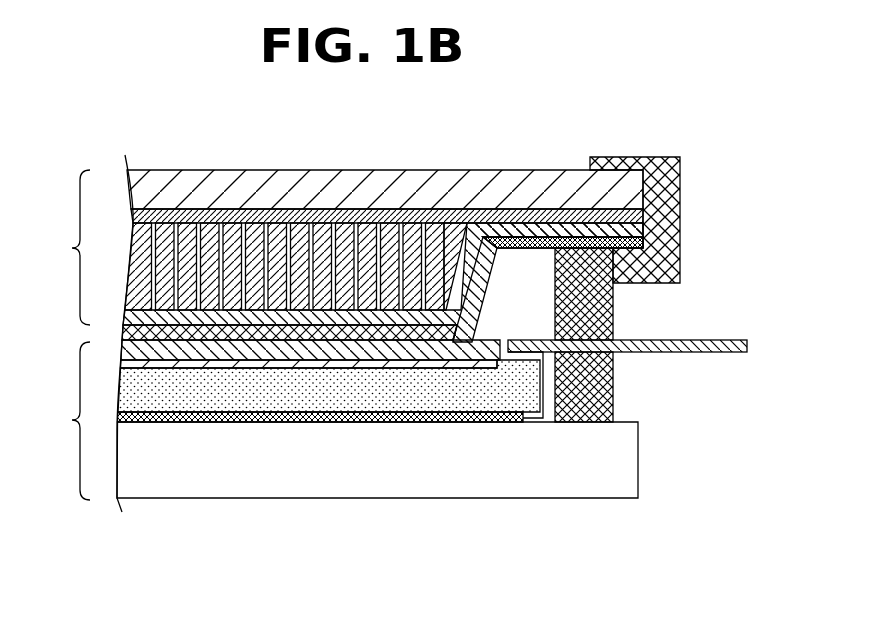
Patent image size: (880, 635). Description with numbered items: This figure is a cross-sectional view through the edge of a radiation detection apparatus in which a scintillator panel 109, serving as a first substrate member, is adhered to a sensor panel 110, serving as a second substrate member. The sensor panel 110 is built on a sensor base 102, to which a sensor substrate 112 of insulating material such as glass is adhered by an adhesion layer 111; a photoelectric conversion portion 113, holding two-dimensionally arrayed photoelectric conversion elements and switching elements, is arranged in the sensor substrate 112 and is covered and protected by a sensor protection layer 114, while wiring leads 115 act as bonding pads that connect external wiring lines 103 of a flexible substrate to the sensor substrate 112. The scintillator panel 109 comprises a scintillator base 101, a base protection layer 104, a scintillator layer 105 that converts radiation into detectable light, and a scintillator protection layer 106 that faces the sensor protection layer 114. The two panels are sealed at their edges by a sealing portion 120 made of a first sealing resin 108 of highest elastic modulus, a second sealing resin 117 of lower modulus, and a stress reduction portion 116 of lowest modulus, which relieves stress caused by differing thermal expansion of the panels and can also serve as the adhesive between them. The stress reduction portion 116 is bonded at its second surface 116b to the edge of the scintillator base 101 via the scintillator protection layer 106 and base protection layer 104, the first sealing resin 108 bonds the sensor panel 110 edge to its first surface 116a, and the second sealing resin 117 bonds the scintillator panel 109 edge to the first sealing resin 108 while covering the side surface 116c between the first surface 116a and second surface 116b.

The scintillator base 101 is at (183, 178).
The sensor base 102 is at (173, 443).
The external wiring lines 103 is at (724, 339).
The base protection layer 104 is at (254, 217).
The scintillator layer 105 is at (338, 228).
The scintillator protection layer 106 is at (462, 240).
The first sealing resin 108 is at (614, 380).
The scintillator panel 109 is at (56, 247).
The sensor panel 110 is at (56, 421).
The adhesion layer 111 is at (255, 422).
The sensor substrate 112 is at (345, 400).
The photoelectric conversion portion 113 is at (412, 362).
The sensor protection layer 114 is at (470, 343).
The wiring leads 115 is at (530, 361).
The stress reduction portion 116 is at (440, 236).
The first surface 116a is at (533, 249).
The second surface 116b is at (537, 240).
The side surface 116c is at (650, 244).
The second sealing resin 117 is at (680, 173).
The sealing portion 120 is at (673, 168).